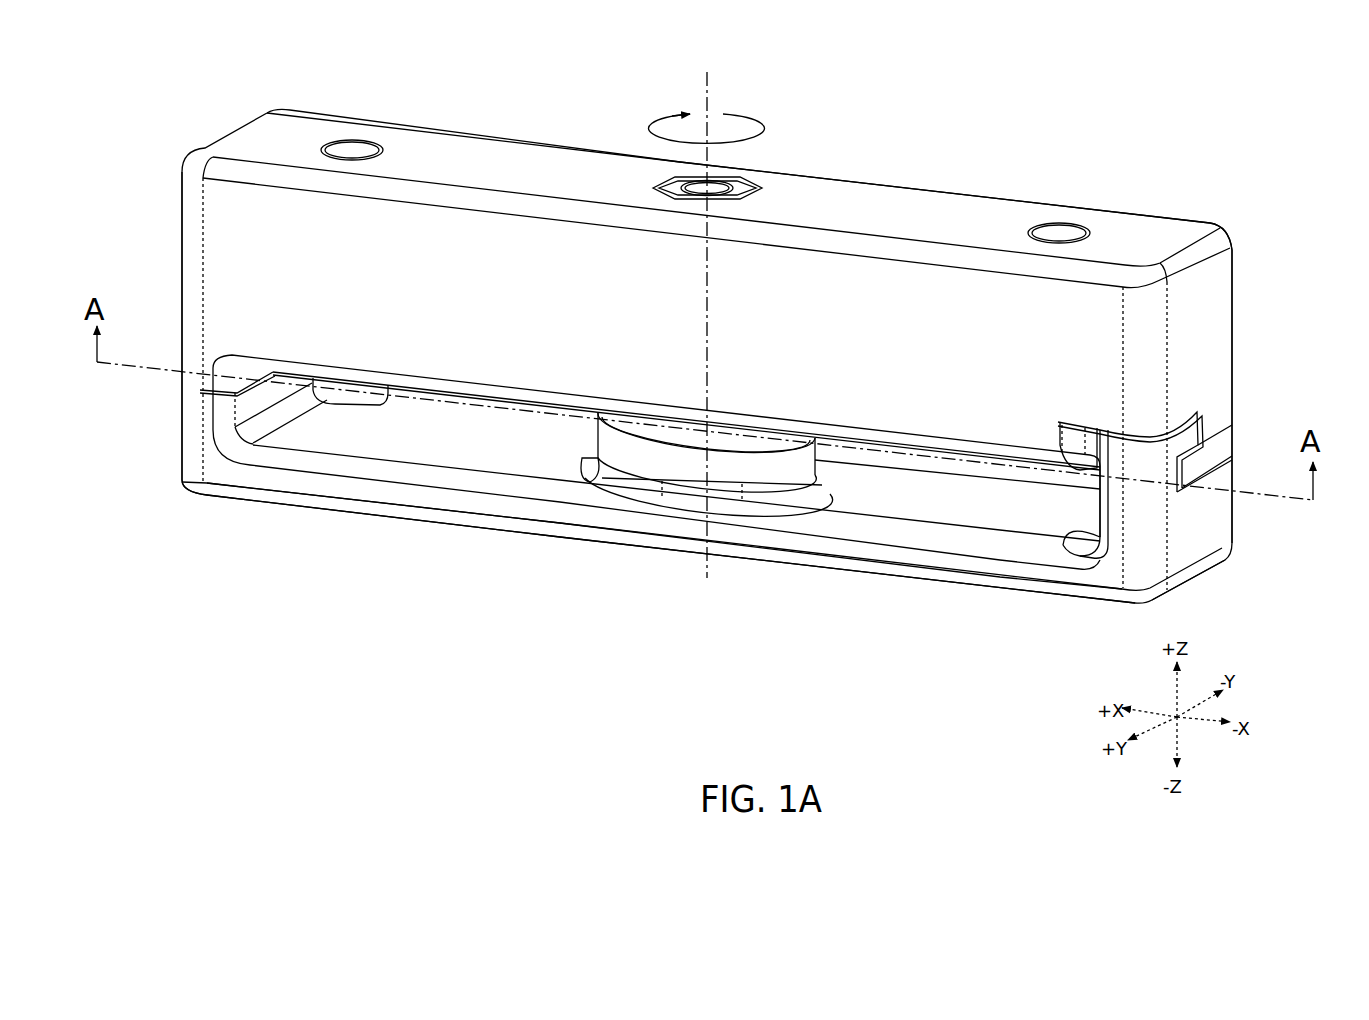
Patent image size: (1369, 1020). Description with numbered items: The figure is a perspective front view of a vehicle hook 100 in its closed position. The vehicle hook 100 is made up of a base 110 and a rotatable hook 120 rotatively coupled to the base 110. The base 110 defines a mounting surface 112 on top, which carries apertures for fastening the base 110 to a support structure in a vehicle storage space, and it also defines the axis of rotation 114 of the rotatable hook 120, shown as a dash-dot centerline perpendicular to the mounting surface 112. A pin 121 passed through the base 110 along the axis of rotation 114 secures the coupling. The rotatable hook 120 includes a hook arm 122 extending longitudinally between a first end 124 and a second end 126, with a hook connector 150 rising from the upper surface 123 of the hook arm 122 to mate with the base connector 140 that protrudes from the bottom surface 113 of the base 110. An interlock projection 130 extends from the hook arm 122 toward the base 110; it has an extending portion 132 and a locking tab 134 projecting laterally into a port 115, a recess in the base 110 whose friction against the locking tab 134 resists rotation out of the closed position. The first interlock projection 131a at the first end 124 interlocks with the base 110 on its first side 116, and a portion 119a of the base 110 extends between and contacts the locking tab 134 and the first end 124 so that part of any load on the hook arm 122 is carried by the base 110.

The vehicle hook 100 is at (1236, 177).
The base 110 is at (1240, 288).
The mounting surface 112 is at (980, 190).
The bottom surface 113 is at (384, 399).
The axis of rotation 114 is at (705, 84).
The port 115 is at (1200, 410).
The first side 116 is at (154, 246).
The portion 119a is at (1212, 470).
The rotatable hook 120 is at (1235, 549).
The pin 121 is at (734, 186).
The hook arm 122 is at (892, 574).
The upper surface 123 is at (443, 469).
The first end 124 is at (1210, 581).
The second end 126 is at (180, 493).
The interlock projection 130 is at (1094, 499).
The first interlock projection 131a is at (1088, 535).
The extending portion 132 is at (1078, 463).
The locking tab 134 is at (1183, 414).
The base connector 140 is at (587, 434).
The hook connector 150 is at (835, 478).